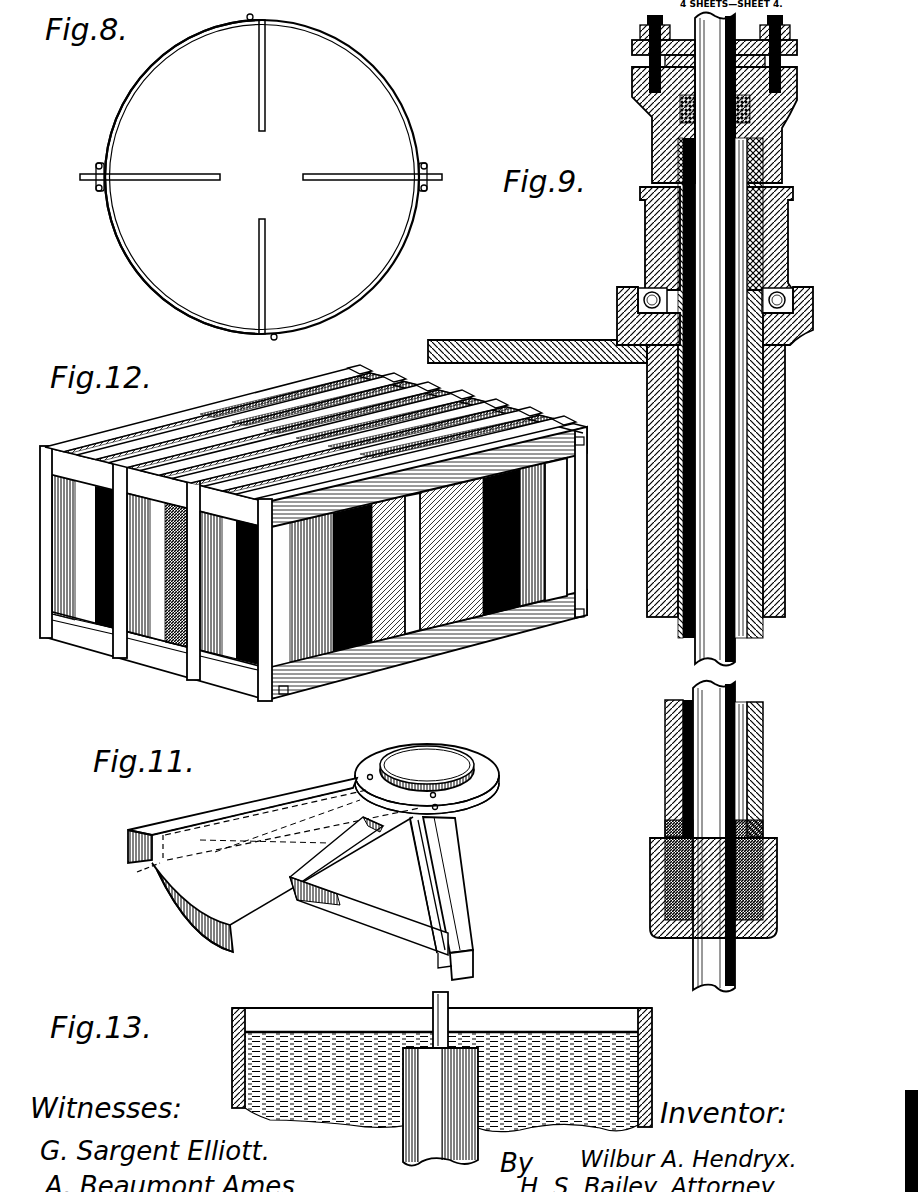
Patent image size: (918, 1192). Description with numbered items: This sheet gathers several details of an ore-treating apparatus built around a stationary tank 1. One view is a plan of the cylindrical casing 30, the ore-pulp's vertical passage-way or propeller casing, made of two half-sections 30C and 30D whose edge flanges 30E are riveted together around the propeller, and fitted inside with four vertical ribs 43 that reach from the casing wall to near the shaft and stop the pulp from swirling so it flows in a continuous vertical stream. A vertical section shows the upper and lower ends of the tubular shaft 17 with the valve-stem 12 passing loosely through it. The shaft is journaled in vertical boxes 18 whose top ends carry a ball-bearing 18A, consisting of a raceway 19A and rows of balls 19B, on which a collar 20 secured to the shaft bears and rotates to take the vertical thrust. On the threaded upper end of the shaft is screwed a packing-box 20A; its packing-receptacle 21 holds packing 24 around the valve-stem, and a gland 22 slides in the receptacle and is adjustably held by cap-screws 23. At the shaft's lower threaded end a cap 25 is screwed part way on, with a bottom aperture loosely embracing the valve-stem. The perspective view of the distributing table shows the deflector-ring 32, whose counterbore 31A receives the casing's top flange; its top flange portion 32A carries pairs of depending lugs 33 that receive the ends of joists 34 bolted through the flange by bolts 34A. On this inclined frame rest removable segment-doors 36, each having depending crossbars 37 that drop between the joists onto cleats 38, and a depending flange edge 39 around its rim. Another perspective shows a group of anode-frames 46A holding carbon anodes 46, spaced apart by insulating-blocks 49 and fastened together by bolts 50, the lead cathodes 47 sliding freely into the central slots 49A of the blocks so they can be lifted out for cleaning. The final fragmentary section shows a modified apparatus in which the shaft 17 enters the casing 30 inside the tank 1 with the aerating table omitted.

In FIG. 13, the stationary tank 1 is at (652, 1030).
In FIG. 9, the valve-stem 12 is at (716, 157).
In FIG. 9, the tubular shaft 17 is at (755, 425).
In FIG. 13, the tubular shaft 17 is at (450, 996).
In FIG. 9, the vertical boxes 18 is at (527, 340).
In FIG. 9, the ball-bearing 18A is at (617, 300).
In FIG. 9, the raceway 19A is at (811, 302).
In FIG. 9, the balls 19B is at (650, 286).
In FIG. 9, the collar 20 is at (787, 230).
In FIG. 9, the packing-box 20A is at (638, 111).
In FIG. 9, the packing-receptacle 21 is at (748, 116).
In FIG. 9, the gland 22 is at (676, 77).
In FIG. 9, the cap-screws 23 is at (648, 22).
In FIG. 9, the packing 24 is at (680, 112).
In FIG. 9, the cap 25 is at (650, 866).
In FIG. 8, the cylindrical casing 30 is at (362, 73).
In FIG. 13, the cylindrical casing 30 is at (403, 1147).
In FIG. 8, the half-section of casing 30C is at (137, 88).
In FIG. 8, the half-section of casing 30D is at (140, 276).
In FIG. 8, the flanges 30E is at (452, 193).
In FIG. 11, the counterbore 31A is at (463, 756).
In FIG. 11, the deflector-ring 32 is at (500, 770).
In FIG. 11, the top flange portion 32A is at (503, 790).
In FIG. 11, the depending lugs 33 is at (408, 828).
In FIG. 11, the joists 34 is at (212, 810).
In FIG. 11, the bolts 34A is at (510, 815).
In FIG. 11, the segment-doors 36 is at (181, 917).
In FIG. 11, the crossbars 37 is at (362, 830).
In FIG. 11, the cleats 38 is at (418, 875).
In FIG. 11, the depending flange edge 39 is at (226, 941).
In FIG. 8, the ribs 43 is at (266, 114).
In FIG. 12, the anodes 46 is at (462, 649).
In FIG. 12, the anode-frames 46A is at (157, 418).
In FIG. 12, the cathodes 47 is at (96, 623).
In FIG. 12, the insulating-blocks 49 is at (72, 445).
In FIG. 12, the central slots 49A is at (378, 372).
In FIG. 12, the bolts 50 is at (285, 694).